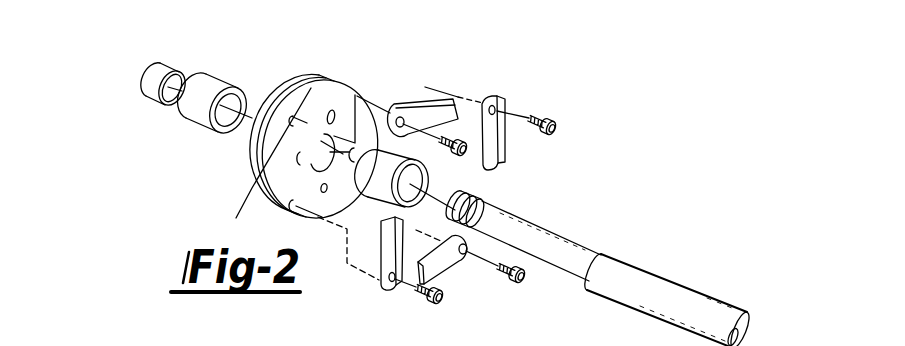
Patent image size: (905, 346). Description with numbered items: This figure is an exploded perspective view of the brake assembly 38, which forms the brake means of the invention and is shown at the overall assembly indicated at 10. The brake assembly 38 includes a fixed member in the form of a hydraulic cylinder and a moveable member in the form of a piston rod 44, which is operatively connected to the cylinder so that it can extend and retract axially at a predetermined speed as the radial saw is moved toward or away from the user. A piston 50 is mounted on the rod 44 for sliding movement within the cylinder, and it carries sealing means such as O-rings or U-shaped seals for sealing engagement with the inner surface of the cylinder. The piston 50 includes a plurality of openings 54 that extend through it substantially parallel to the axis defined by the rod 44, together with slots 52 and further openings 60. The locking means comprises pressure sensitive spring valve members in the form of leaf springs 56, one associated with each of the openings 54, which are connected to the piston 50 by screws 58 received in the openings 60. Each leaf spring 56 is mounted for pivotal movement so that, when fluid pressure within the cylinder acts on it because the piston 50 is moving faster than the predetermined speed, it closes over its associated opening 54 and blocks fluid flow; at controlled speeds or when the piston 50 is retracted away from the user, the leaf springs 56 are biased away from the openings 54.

The roller assembly 10 is at (580, 156).
The brake assembly 38 is at (369, 82).
The piston rod 44 is at (575, 235).
The piston 50 is at (315, 95).
The slots 52 is at (296, 222).
The openings 54 is at (320, 188).
The leaf springs 56 is at (429, 108).
The screws 58 is at (507, 283).
The openings 60 is at (252, 188).